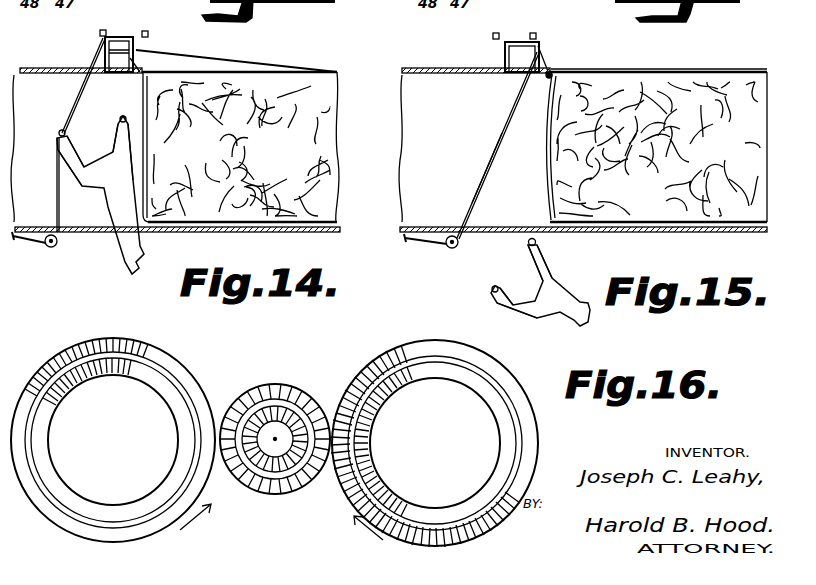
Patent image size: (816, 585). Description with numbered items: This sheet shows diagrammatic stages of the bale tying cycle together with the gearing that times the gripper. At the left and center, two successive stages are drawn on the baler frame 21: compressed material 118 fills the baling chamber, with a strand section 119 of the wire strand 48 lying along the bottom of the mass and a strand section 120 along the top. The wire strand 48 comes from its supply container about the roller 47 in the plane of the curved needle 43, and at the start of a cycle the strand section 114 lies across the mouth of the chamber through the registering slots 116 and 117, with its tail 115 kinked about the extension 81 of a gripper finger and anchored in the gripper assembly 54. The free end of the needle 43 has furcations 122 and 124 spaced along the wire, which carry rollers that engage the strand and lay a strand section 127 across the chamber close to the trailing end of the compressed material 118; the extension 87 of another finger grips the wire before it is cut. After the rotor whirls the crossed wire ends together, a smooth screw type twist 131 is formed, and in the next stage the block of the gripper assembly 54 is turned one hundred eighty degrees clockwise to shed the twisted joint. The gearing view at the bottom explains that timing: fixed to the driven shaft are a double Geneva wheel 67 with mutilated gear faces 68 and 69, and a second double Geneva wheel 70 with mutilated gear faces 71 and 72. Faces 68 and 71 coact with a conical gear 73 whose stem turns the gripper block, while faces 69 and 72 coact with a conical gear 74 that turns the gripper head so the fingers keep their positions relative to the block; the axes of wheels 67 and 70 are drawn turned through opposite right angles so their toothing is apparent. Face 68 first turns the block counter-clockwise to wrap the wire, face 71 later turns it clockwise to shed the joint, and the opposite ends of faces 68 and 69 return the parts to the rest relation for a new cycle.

In FIG. 14, the wheel-supported frame 21 is at (30, 68).
In FIG. 15, the wheel-supported frame 21 is at (422, 68).
In FIG. 14, the curved needle 43 is at (122, 259).
In FIG. 15, the curved needle 43 is at (578, 320).
In FIG. 14, the roller 47 is at (53, 249).
In FIG. 15, the roller 47 is at (452, 250).
In FIG. 14, the wire strand 48 is at (33, 247).
In FIG. 15, the wire strand 48 is at (422, 247).
In FIG. 14, the gripper assembly 54 is at (122, 38).
In FIG. 15, the gripper assembly 54 is at (521, 42).
In FIG. 14, the double Geneva wheel 67 is at (103, 31).
In FIG. 16, the double Geneva wheel 67 is at (533, 383).
In FIG. 16, the mutilated gear face 68 is at (450, 368).
In FIG. 16, the mutilated gear face 69 is at (425, 345).
In FIG. 16, the double Geneva wheel 70 is at (57, 337).
In FIG. 16, the mutilated gear face 71 is at (177, 400).
In FIG. 16, the mutilated gear face 72 is at (165, 357).
In FIG. 16, the conical gear 73 is at (282, 412).
In FIG. 16, the conical gear 74 is at (297, 483).
In FIG. 14, the extension 81 is at (148, 34).
In FIG. 15, the extension 81 is at (492, 35).
In FIG. 15, the extension 87 is at (536, 34).
In FIG. 14, the strand section 114 is at (56, 182).
In FIG. 15, the strand section 114 is at (490, 166).
In FIG. 14, the tail 115 is at (101, 40).
In FIG. 15, the tail 115 is at (548, 50).
In FIG. 14, the slot 116 is at (93, 233).
In FIG. 15, the slot 116 is at (492, 233).
In FIG. 14, the slot 117 is at (67, 68).
In FIG. 15, the slot 117 is at (471, 68).
In FIG. 14, the material 118 is at (322, 143).
In FIG. 15, the material 118 is at (762, 142).
In FIG. 14, the strand section 119 is at (232, 224).
In FIG. 15, the strand section 119 is at (672, 224).
In FIG. 14, the strand section 120 is at (232, 58).
In FIG. 15, the strand section 120 is at (659, 91).
In FIG. 14, the furcation 122 is at (121, 117).
In FIG. 15, the furcation 122 is at (545, 258).
In FIG. 14, the furcation 124 is at (70, 153).
In FIG. 15, the furcation 124 is at (507, 303).
In FIG. 14, the strand section 127 is at (150, 143).
In FIG. 15, the strand section 127 is at (536, 147).
In FIG. 14, the screw type twist 131 is at (120, 62).
In FIG. 15, the screw type twist 131 is at (552, 70).